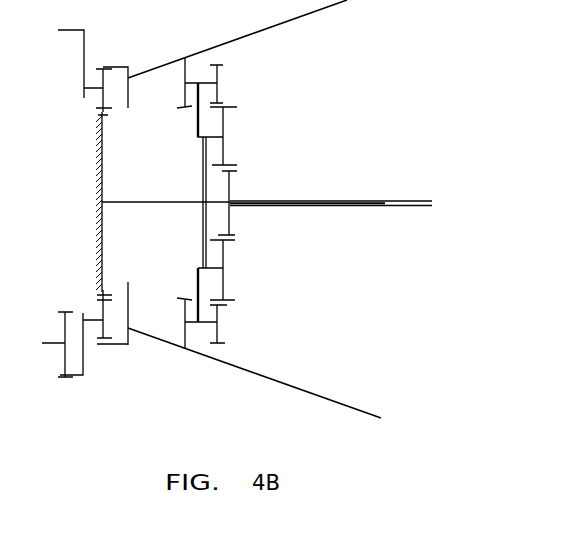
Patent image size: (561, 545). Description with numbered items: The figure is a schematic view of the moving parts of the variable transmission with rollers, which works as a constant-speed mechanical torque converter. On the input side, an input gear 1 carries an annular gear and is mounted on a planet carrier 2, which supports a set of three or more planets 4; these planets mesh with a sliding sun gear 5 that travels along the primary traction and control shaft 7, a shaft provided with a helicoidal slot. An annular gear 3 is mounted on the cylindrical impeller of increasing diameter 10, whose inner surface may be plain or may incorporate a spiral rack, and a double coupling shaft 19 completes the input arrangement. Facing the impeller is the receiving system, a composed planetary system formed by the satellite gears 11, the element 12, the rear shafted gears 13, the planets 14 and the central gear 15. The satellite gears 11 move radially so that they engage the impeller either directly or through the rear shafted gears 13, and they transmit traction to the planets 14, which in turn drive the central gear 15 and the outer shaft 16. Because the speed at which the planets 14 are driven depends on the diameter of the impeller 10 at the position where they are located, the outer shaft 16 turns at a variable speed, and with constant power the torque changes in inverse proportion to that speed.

The input gear 1 is at (59, 366).
The planet carrier 2 is at (73, 381).
The annular gear 3 is at (124, 348).
The planets 4 is at (101, 317).
The sliding sun gear 5 is at (96, 262).
The primary traction and control shaft 7 is at (129, 206).
The cylindrical impeller of increasing diameter 10 is at (203, 50).
The satellite gears 11 is at (183, 74).
The receiving system element 12 is at (201, 183).
The rear shafted gears 13 is at (219, 320).
The planets 14 is at (227, 259).
The central gear 15 is at (232, 220).
The outer shaft 16 is at (297, 209).
The double coupling shaft 19 is at (398, 209).